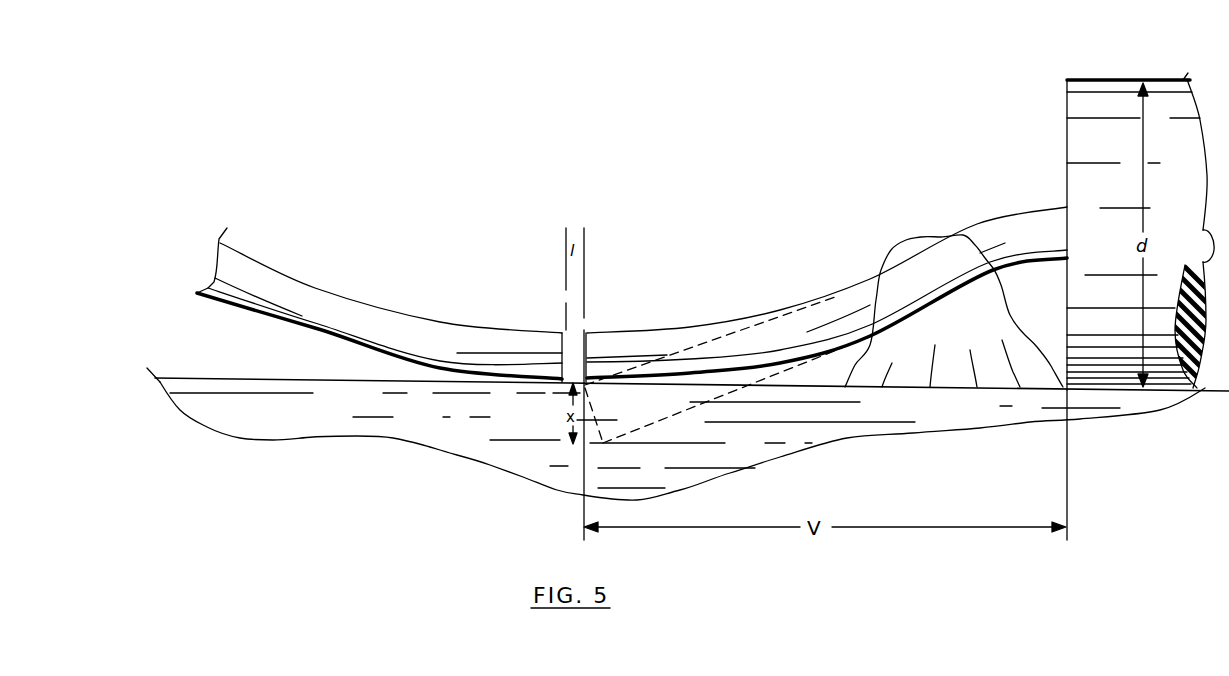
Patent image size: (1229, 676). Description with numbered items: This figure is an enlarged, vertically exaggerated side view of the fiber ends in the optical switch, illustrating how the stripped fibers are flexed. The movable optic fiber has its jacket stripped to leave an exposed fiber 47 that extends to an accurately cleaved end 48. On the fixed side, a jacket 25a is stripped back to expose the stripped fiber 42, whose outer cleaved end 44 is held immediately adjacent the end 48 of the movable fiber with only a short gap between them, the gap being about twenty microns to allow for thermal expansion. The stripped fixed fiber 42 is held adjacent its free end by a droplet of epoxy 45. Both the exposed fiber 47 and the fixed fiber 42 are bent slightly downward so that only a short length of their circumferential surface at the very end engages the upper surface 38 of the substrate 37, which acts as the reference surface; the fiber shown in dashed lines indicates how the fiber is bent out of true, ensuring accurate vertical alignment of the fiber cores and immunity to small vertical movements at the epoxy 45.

The jacket 25a is at (1108, 153).
The exposed fiber 47 is at (385, 325).
The cleaved end 48 is at (569, 342).
The cleaved end 44 is at (580, 352).
The stripped fiber 42 is at (757, 332).
The droplet of epoxy 45 is at (1000, 315).
The substrate 37 is at (787, 432).
The upper surface 38 is at (820, 386).